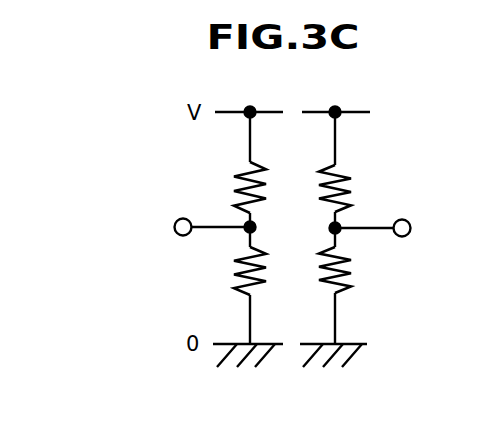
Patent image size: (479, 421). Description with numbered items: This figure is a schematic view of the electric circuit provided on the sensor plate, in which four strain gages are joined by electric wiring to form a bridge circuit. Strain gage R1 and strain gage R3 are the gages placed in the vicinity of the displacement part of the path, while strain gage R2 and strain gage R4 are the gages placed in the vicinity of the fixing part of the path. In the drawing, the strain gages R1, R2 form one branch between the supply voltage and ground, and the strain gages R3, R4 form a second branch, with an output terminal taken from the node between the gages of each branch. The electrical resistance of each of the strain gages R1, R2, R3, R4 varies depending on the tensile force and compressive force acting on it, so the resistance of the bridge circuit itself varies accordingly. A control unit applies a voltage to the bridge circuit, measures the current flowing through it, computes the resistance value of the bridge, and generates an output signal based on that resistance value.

The strain gage R1 is at (244, 170).
The strain gage R2 is at (243, 272).
The strain gage R3 is at (342, 177).
The strain gage R4 is at (340, 276).